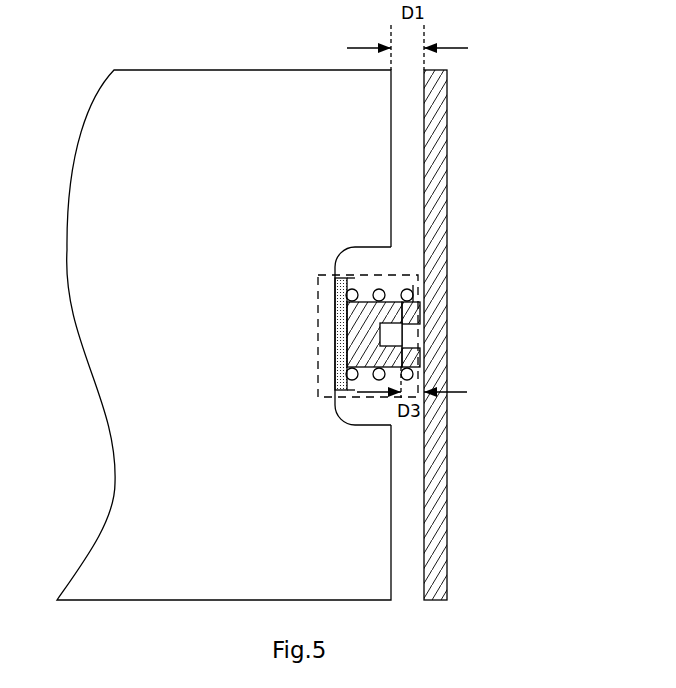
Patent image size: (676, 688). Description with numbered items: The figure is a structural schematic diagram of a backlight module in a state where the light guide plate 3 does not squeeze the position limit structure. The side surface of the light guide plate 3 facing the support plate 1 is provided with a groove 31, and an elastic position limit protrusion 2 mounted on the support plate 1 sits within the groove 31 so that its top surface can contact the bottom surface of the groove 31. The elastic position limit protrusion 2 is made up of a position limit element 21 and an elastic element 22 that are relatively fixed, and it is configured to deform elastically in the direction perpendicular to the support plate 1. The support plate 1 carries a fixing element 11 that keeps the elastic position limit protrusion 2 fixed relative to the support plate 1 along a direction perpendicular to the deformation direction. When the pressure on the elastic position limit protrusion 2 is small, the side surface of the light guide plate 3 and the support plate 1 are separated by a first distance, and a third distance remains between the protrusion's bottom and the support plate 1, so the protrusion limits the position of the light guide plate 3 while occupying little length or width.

The support plate 1 is at (447, 477).
The fixing element 11 is at (410, 335).
The elastic position limit protrusion 2 is at (408, 378).
The position limit element 21 is at (396, 308).
The elastic element 22 is at (413, 289).
The light guide plate 3 is at (392, 533).
The groove 31 is at (380, 255).